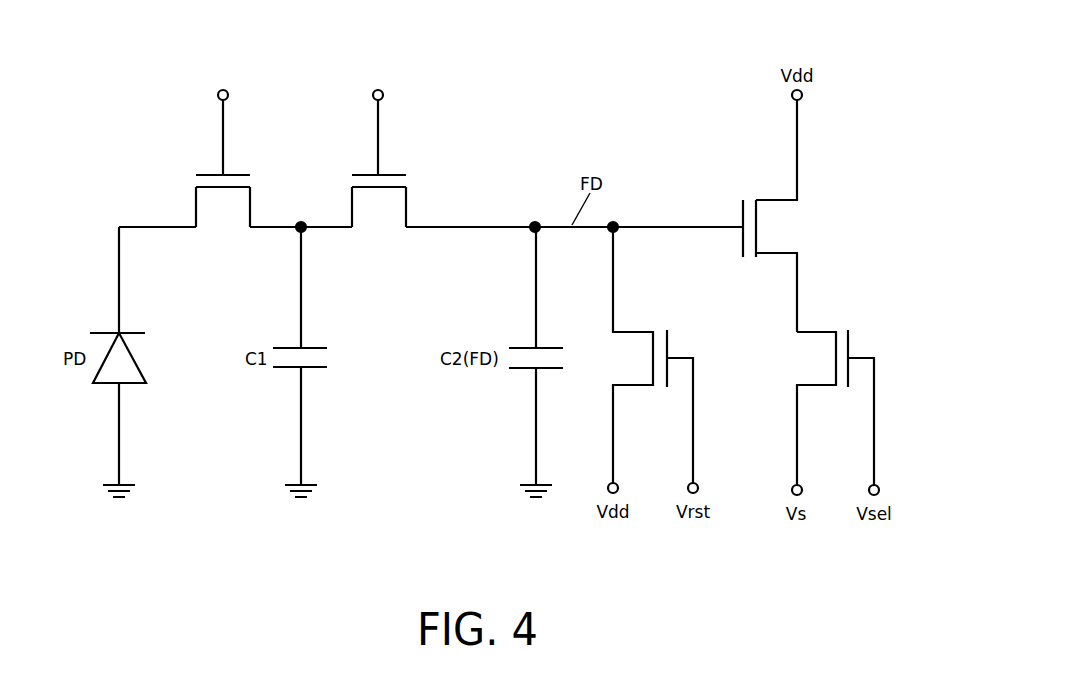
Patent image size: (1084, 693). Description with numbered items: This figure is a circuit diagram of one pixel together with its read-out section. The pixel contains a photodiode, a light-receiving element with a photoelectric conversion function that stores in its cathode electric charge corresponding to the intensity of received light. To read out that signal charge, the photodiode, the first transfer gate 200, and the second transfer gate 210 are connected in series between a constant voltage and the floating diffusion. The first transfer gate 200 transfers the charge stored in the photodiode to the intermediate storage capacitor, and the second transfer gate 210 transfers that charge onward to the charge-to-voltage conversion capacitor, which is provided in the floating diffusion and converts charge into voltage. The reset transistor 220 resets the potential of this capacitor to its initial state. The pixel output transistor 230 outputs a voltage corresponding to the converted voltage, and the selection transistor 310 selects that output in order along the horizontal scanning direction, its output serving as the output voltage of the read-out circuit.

The first transfer gate 200 is at (240, 172).
The second transfer gate 210 is at (363, 172).
The reset transistor 220 is at (668, 346).
The pixel output transistor 230 is at (773, 198).
The selection transistor 310 is at (850, 347).